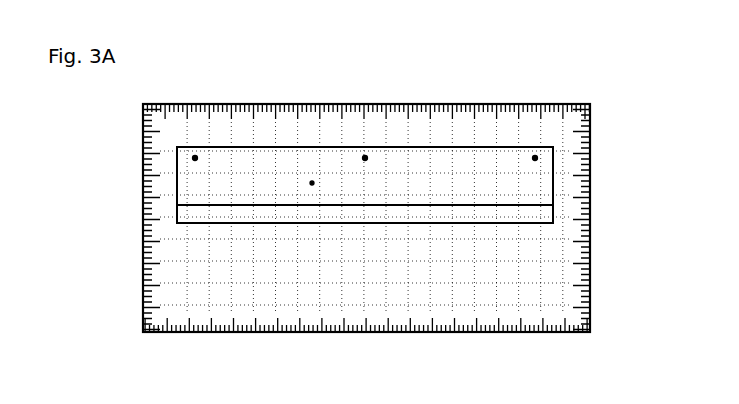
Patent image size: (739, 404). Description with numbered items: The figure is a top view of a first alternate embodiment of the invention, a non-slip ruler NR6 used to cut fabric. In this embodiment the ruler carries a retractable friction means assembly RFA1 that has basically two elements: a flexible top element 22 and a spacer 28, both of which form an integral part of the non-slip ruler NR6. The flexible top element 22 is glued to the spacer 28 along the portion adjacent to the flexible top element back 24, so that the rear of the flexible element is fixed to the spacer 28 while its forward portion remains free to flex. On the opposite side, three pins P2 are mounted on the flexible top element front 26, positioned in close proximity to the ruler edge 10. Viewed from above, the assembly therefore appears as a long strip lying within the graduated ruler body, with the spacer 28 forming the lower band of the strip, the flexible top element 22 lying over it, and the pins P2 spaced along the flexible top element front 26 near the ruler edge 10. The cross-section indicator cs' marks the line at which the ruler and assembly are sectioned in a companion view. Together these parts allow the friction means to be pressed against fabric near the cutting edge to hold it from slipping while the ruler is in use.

The ruler edge 10 is at (565, 103).
The flexible top element 22 is at (268, 167).
The flexible top element back 24 is at (195, 225).
The flexible top element front 26 is at (332, 147).
The spacer 28 is at (535, 217).
The pins P2 is at (195, 158).
The retractable friction means assembly RFA1 is at (312, 183).
The non-slip ruler NR6 is at (244, 85).
The cross-section line start cs' is at (531, 71).